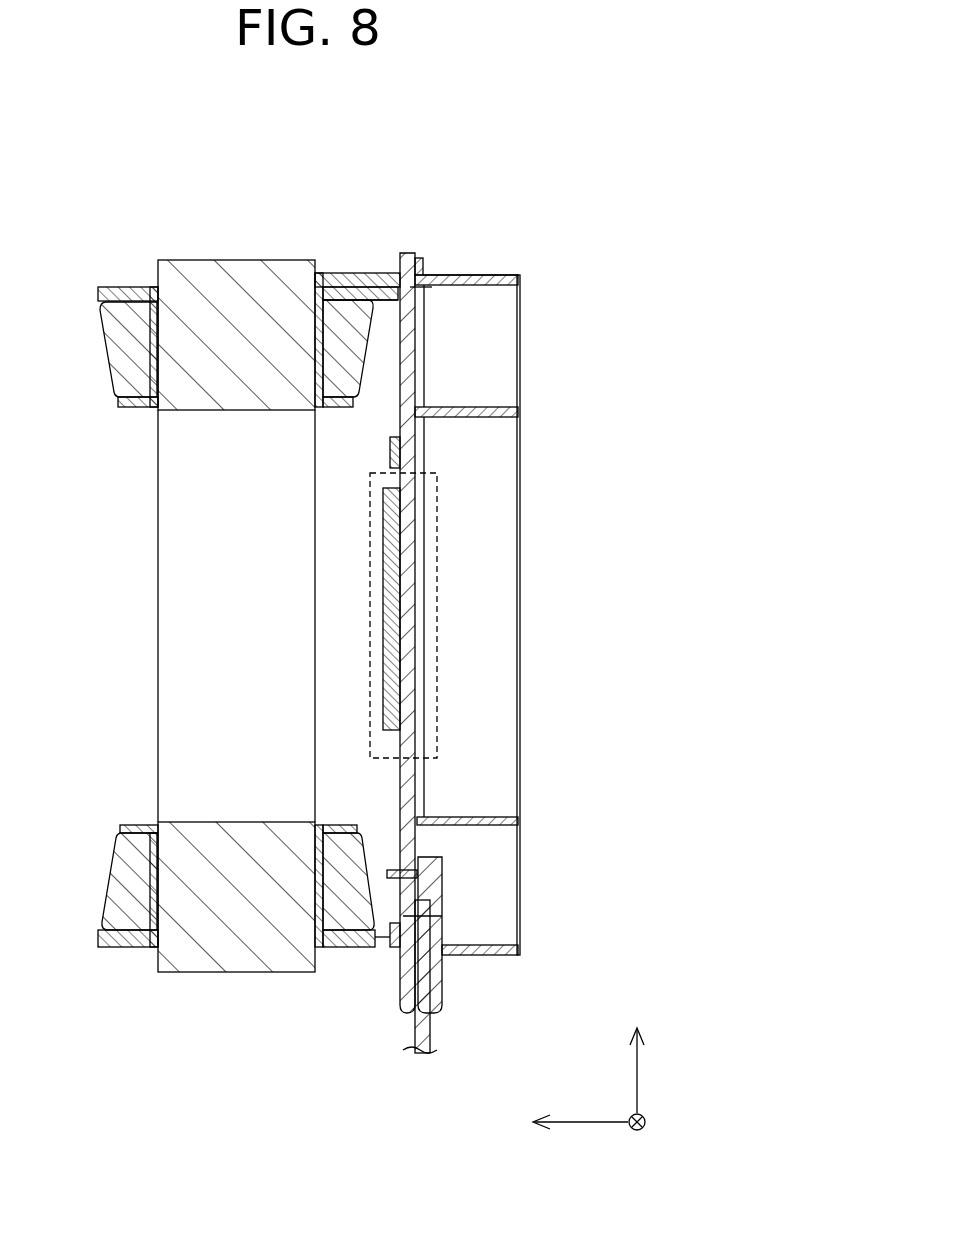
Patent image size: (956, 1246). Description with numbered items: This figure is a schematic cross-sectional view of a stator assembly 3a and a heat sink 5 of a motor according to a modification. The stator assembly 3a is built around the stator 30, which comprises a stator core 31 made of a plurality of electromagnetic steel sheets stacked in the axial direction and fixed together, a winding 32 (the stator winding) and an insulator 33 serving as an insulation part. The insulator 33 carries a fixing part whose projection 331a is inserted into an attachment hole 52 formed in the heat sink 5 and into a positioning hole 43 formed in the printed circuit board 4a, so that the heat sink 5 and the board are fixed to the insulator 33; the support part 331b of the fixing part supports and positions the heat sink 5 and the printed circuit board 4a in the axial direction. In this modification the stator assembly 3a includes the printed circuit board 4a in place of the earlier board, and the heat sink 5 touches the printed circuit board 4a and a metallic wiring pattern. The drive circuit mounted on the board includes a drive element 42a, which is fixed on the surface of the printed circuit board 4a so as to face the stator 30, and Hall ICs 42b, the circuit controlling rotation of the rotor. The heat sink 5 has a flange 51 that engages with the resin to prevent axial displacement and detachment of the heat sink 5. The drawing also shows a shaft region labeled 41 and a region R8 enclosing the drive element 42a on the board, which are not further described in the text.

The stator assembly 3a is at (425, 170).
The stator 30 is at (247, 212).
The stator core 31 is at (228, 295).
The winding 32 is at (154, 330).
The insulator 33 is at (130, 292).
The projection 331a is at (432, 287).
The support part 331b is at (400, 293).
The printed circuit board 4a is at (406, 253).
The shaft 41 is at (430, 1027).
The drive element 42a is at (383, 584).
The Hall ICs 42b is at (390, 458).
The positioning hole 43 is at (399, 278).
The heat sink 5 is at (520, 594).
The flange 51 is at (424, 262).
The attachment hole 52 is at (433, 275).
The region R8 is at (437, 608).